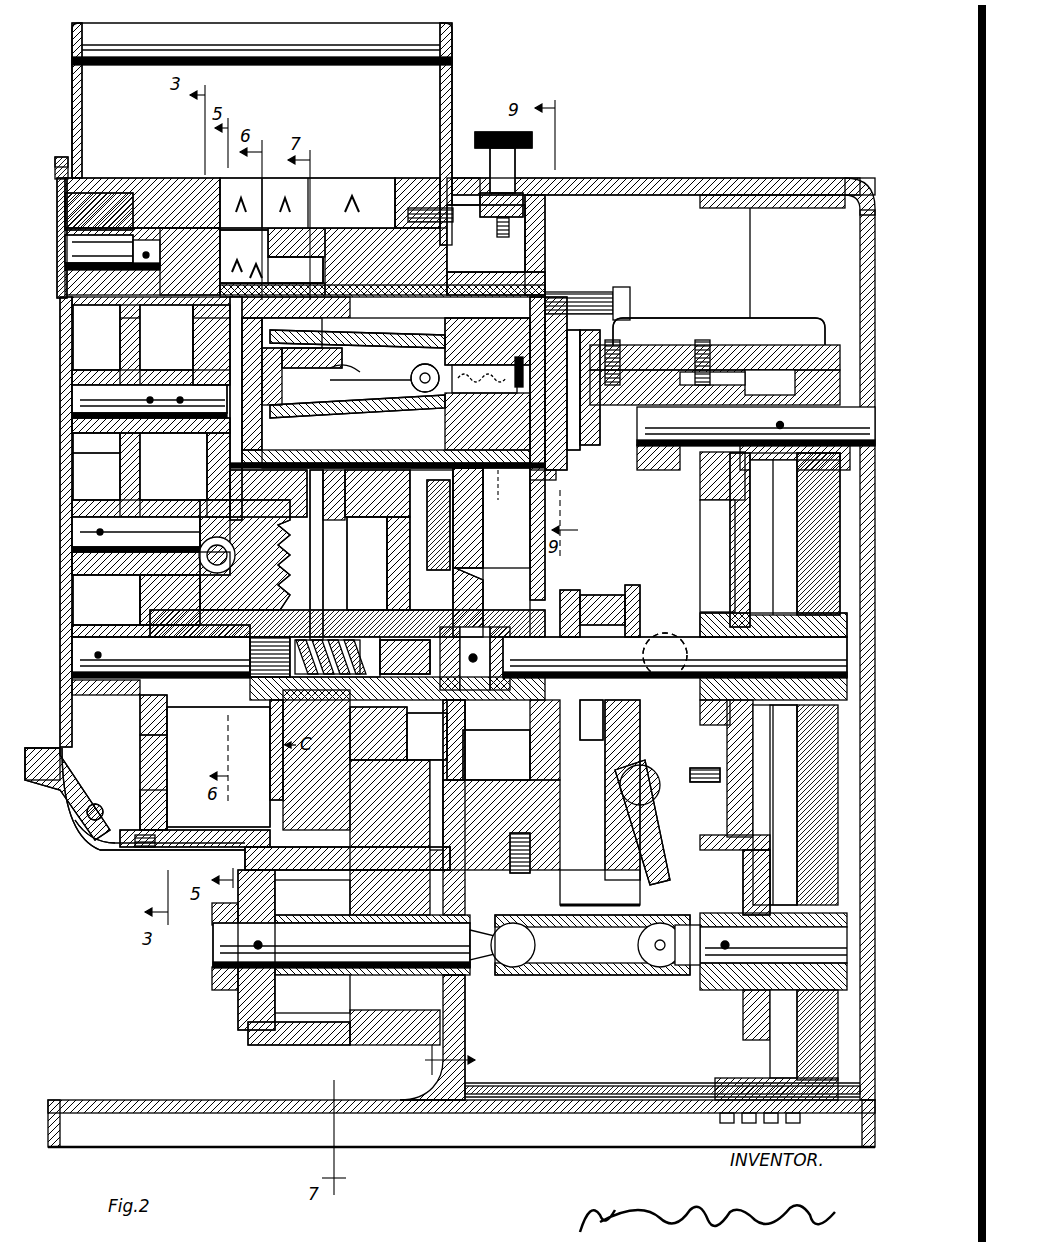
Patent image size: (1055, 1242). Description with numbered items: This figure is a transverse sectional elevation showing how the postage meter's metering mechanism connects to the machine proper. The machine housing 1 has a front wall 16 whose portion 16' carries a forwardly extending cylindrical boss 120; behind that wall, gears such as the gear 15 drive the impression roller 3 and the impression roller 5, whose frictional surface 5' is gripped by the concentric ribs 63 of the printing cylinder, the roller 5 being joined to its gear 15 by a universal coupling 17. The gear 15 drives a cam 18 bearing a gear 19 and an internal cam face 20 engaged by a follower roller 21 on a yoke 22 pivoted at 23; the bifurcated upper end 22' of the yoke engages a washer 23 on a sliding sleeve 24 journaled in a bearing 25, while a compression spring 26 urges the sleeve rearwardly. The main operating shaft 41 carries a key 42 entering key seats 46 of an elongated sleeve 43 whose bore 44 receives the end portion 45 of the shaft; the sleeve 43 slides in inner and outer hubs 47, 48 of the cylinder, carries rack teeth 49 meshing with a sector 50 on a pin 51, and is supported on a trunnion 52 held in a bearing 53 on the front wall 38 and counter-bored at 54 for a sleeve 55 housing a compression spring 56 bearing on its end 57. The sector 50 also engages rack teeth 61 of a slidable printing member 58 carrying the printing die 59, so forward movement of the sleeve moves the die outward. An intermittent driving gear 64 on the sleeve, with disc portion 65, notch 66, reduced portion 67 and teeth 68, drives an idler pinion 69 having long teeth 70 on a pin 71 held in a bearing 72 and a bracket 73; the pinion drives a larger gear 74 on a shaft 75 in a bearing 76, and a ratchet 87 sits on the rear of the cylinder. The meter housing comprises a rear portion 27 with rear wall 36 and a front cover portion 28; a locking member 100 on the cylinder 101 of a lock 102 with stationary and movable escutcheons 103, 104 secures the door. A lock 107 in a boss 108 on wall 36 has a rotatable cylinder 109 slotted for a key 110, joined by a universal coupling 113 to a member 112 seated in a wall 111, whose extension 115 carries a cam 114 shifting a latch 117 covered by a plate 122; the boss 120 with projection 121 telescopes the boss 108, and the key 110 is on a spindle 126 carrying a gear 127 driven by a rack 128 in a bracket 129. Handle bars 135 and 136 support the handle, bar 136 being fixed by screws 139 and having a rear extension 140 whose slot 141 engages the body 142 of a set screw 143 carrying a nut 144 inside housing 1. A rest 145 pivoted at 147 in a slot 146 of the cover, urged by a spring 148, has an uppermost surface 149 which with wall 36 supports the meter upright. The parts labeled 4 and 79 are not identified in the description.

The housing 1 is at (678, 180).
The impression roller 3 is at (285, 878).
The plunger section 4 is at (474, 774).
The impression roller 5 is at (230, 951).
The frictional surface 5' is at (272, 1049).
The gear 15 is at (743, 882).
The front wall 16 is at (451, 1037).
The portion of main housing wall 16' is at (568, 448).
The universal coupling 17 is at (588, 977).
The cam 18 is at (735, 552).
The gear 19 is at (770, 848).
The internal cam face 20 is at (720, 508).
The follower roller 21 is at (700, 765).
The yoke 22 is at (609, 790).
The upper end of yoke 22' is at (665, 635).
The washer 23 is at (630, 585).
The sliding sleeve 24 is at (570, 590).
The bearing 25 is at (585, 722).
The compression spring 26 is at (600, 595).
The rear portion 27 is at (345, 178).
The front cover portion 28 is at (152, 178).
The rear wall 36 is at (450, 522).
The front wall 38 is at (60, 350).
The main operating shaft 41 is at (705, 613).
The key 42 is at (495, 668).
The elongated sleeve 43 is at (366, 610).
The bore 44 is at (410, 725).
The extended end portion 45 is at (380, 740).
The key seats 46 is at (478, 605).
The inner hub 47 is at (388, 565).
The outer hub 48 is at (182, 712).
The gear teeth 49 is at (150, 608).
The sector 50 is at (205, 575).
The pin 51 is at (145, 588).
The trunnion 52 is at (85, 648).
The bearing 53 is at (72, 590).
The counter-bore 54 is at (290, 680).
The sleeve 55 is at (270, 725).
The compression spring 56 is at (325, 680).
The end of sleeve 57 is at (400, 680).
The printing member 58 is at (345, 517).
The printing die 59 is at (305, 835).
The gear teeth 61 is at (318, 520).
The concentric ribs 63 is at (280, 520).
The intermittent driving gear 64 is at (145, 717).
The disc-like rear portion 65 is at (118, 583).
The notch 66 is at (150, 760).
The reduced portion 67 is at (140, 730).
The gear teeth 68 is at (155, 770).
The idler pinion 69 is at (110, 500).
The long teeth 70 is at (145, 500).
The pin 71 is at (80, 530).
The bearing 72 is at (80, 485).
The bracket 73 is at (205, 352).
The larger gear 74 is at (120, 450).
The shaft 75 is at (85, 395).
The bearing 76 is at (90, 368).
The wall 79 is at (200, 360).
The ratchet 87 is at (445, 550).
The locking member 100 is at (178, 240).
The cylinder 101 is at (72, 245).
The lock 102 is at (108, 200).
The stationary escutcheon 103 is at (62, 158).
The movable escutcheon 104 is at (57, 180).
The lock 107 is at (462, 338).
The cylindrical boss 108 is at (452, 280).
The rotatable cylinder 109 is at (411, 380).
The key 110 is at (483, 518).
The wall 111 is at (330, 335).
The rotatable member 112 is at (300, 395).
The universal coupling 113 is at (335, 362).
The cam 114 is at (362, 360).
The reduced extension 115 is at (185, 330).
The locking member 117 is at (275, 295).
The cylindrical boss 120 is at (470, 287).
The arcuately formed projection 121 is at (245, 290).
The plate 122 is at (232, 318).
The spindle 126 is at (568, 392).
The gear 127 is at (605, 345).
The rack 128 is at (578, 430).
The bracket 129 is at (574, 415).
The bar 135 is at (72, 108).
The bar 136 is at (440, 105).
The screws 139 is at (420, 195).
The rear extension 140 is at (467, 190).
The slot 141 is at (515, 200).
The body 142 is at (520, 160).
The set screw 143 is at (490, 132).
The nut 144 is at (545, 235).
The rest 145 is at (85, 815).
The slot 146 is at (85, 848).
The pivot 147 is at (100, 843).
The spring 148 is at (85, 790).
The uppermost surface 149 is at (42, 748).